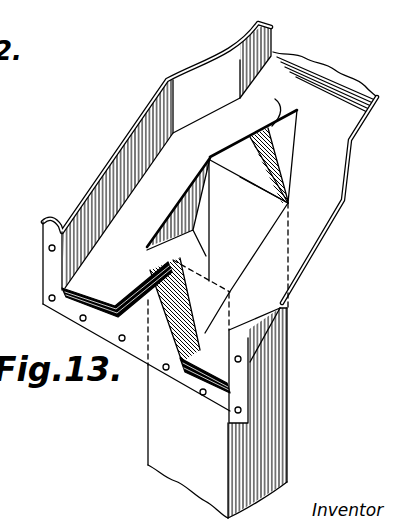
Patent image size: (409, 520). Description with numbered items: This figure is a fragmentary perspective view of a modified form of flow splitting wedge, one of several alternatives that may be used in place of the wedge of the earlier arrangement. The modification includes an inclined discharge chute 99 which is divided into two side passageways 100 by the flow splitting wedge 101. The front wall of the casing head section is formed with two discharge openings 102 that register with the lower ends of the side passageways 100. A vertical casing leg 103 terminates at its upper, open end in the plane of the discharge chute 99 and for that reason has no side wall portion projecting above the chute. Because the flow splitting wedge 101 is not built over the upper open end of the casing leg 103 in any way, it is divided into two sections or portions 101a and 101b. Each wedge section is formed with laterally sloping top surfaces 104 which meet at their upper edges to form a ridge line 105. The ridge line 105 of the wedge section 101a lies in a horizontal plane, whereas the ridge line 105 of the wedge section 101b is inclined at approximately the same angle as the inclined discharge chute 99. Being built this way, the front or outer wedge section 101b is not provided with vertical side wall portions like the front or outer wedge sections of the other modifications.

The discharge chute 99 is at (344, 122).
The side passageways 100 is at (178, 193).
The flow splitting wedge 101 is at (168, 341).
The wedge section 101a is at (272, 193).
The front or outer wedge section 101b is at (113, 306).
The discharge openings 102 is at (60, 278).
The vertical casing leg 103 is at (287, 413).
The laterally sloping top surfaces 104 is at (266, 128).
The ridge line 105 is at (178, 311).